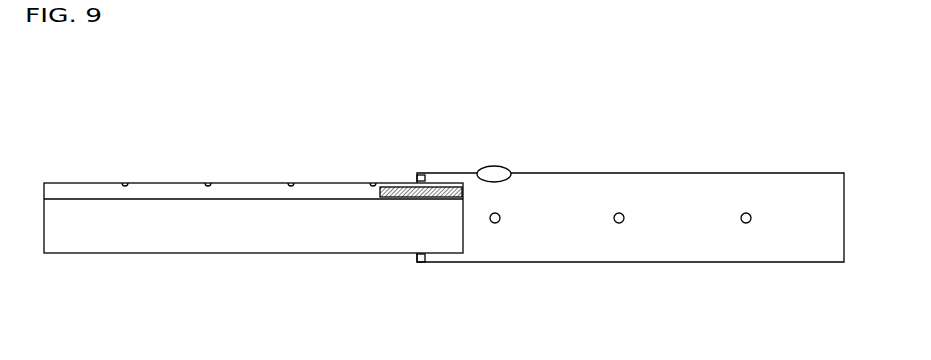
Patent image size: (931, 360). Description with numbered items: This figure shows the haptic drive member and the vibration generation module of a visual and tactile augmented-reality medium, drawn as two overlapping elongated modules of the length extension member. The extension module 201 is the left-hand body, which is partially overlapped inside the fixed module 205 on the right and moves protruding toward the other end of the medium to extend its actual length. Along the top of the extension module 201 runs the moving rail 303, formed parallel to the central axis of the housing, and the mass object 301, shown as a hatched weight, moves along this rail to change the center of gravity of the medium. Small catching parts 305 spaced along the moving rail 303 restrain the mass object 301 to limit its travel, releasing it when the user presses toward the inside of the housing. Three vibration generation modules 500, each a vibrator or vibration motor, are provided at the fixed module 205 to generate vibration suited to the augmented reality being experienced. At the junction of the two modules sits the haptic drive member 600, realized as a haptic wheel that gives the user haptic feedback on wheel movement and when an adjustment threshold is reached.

The extension module 201 is at (245, 216).
The fixed module 205 is at (637, 193).
The mass object 301 is at (400, 188).
The moving rail 303 is at (66, 191).
The catching part 305 is at (126, 183).
The vibration generation module 500 is at (742, 222).
The haptic drive member 600 is at (494, 178).